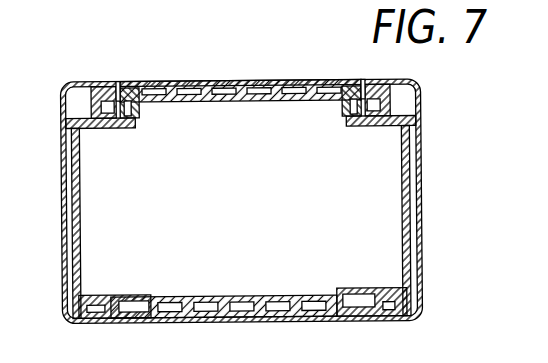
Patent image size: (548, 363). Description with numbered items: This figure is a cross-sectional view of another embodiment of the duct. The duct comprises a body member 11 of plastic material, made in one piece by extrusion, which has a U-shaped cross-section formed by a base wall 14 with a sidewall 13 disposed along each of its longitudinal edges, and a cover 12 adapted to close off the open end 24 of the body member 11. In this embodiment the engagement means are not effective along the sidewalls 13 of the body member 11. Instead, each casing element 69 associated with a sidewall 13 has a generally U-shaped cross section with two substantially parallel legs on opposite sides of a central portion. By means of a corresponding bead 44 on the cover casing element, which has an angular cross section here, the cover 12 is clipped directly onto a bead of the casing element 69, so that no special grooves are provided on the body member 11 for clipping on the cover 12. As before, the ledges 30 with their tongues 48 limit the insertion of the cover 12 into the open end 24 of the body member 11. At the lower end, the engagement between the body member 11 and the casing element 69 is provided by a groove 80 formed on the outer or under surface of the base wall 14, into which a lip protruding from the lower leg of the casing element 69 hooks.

The body member 11 is at (252, 221).
The cover 12 is at (241, 111).
The sidewall 13 is at (71, 207).
The base wall 14 is at (262, 293).
The open end 24 is at (250, 129).
The ledge 30 is at (125, 132).
The bead 44 is at (112, 128).
The tongue 48 is at (134, 124).
The casing element 69 is at (61, 267).
The groove 80 is at (109, 314).